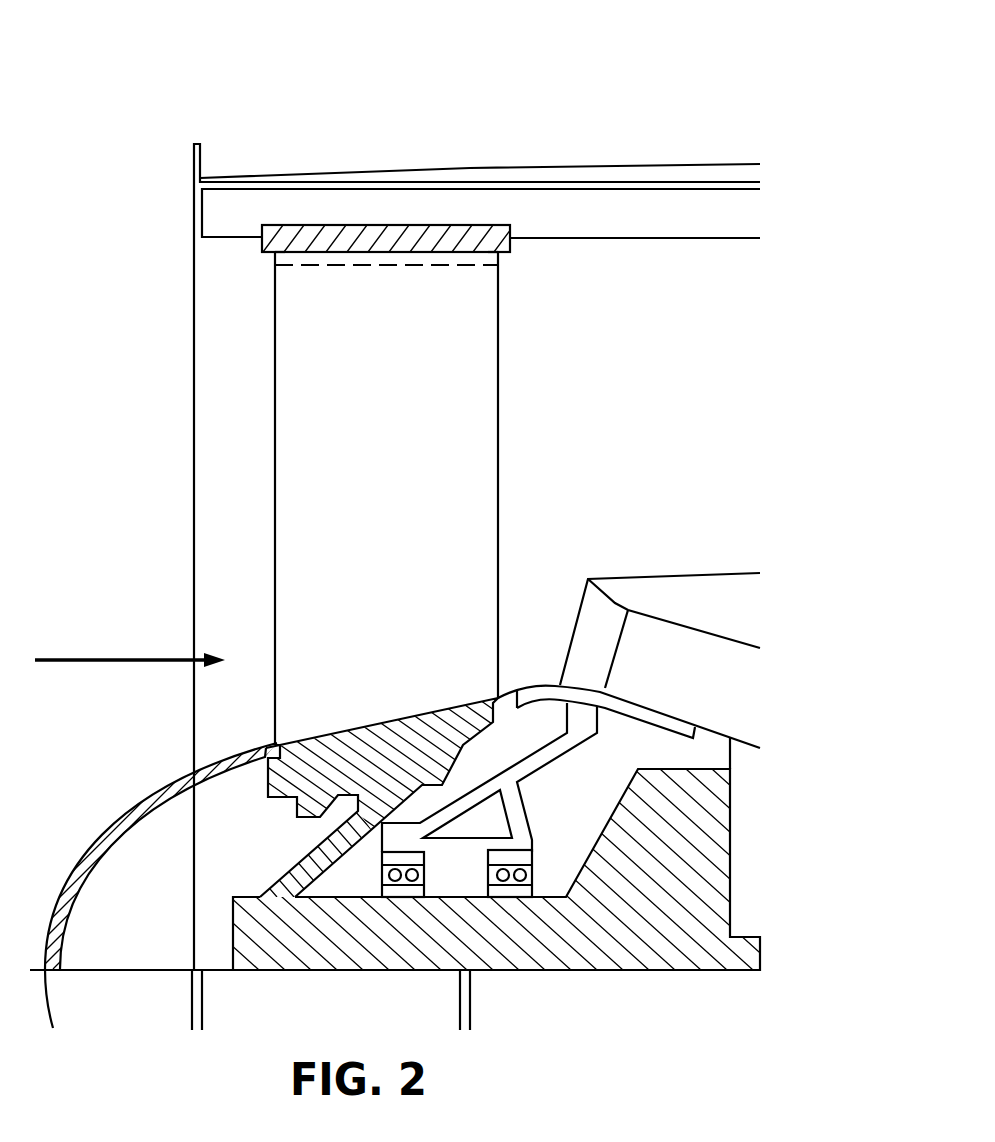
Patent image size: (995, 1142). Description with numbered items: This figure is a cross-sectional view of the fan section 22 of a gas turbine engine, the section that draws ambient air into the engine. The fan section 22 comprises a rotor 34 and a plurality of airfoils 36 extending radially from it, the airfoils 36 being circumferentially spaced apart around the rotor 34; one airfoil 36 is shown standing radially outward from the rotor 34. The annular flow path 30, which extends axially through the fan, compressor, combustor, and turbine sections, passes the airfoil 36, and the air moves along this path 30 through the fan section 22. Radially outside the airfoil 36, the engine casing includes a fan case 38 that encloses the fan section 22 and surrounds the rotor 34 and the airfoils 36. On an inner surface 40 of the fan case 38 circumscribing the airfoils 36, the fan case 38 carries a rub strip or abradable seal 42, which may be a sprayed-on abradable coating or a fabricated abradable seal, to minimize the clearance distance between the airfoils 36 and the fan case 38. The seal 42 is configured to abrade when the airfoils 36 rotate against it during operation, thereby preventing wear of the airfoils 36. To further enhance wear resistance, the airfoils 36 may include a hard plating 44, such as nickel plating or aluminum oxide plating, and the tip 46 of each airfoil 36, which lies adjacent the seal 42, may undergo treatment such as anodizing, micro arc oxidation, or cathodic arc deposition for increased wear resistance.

The fan section 22 is at (622, 143).
The annular flow path 30 is at (137, 660).
The rotor 34 is at (233, 932).
The airfoil 36 is at (406, 481).
The fan case 38 is at (248, 208).
The inner surface 40 is at (232, 245).
The abradable seal 42 is at (376, 237).
The hard plating 44 is at (283, 258).
The tip 46 is at (498, 258).